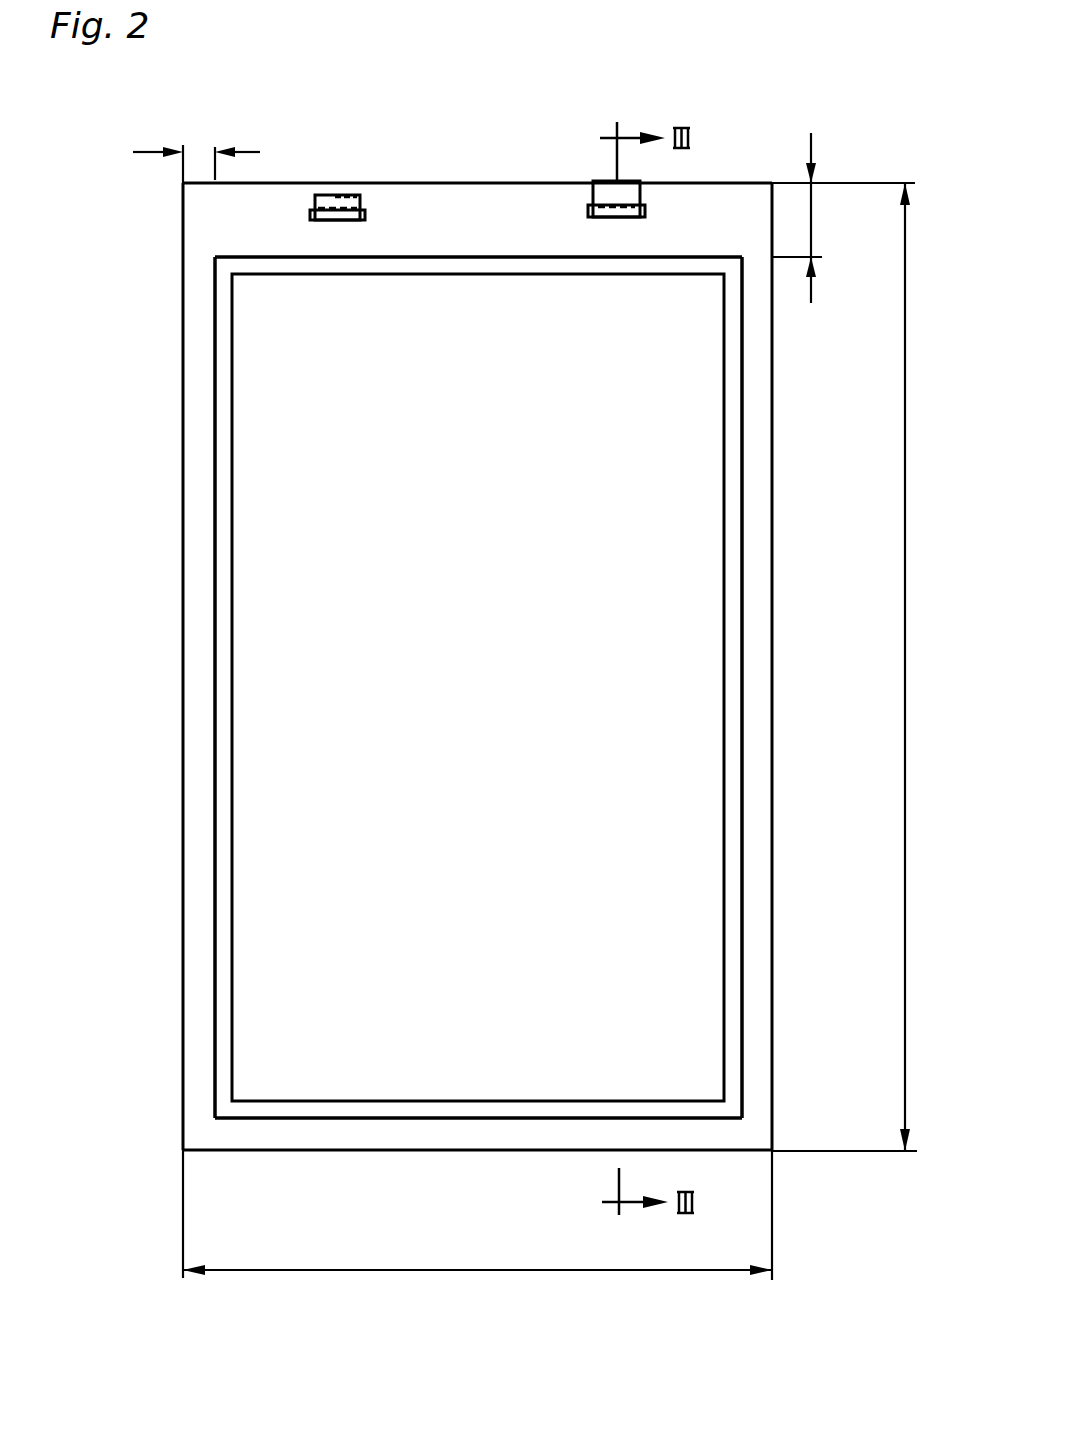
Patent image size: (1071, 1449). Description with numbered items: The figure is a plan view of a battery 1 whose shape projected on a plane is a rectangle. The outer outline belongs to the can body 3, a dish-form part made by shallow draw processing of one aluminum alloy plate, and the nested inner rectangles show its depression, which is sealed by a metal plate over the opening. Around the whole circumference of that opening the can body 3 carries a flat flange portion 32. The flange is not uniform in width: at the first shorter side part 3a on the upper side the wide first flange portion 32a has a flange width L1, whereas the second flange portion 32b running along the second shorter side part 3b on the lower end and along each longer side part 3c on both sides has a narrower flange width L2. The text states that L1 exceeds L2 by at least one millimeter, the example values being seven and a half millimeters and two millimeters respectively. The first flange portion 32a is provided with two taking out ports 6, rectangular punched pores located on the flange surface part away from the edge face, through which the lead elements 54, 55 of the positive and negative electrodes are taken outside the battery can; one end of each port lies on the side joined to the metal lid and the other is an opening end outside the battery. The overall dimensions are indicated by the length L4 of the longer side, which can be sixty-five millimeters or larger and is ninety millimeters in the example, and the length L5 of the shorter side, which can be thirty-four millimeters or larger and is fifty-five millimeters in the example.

The battery 1 is at (125, 268).
The can body 3 is at (477, 664).
The first shorter side part 3a is at (400, 185).
The second shorter side part 3b is at (435, 1150).
The longer side part 3c is at (184, 535).
The taking out port 6 is at (365, 213).
The flange portion 32 is at (178, 667).
The first flange portion 32a is at (467, 207).
The second flange portion 32b is at (200, 457).
The lead element 54 is at (625, 197).
The lead element 55 is at (320, 205).
The flange width of first flange portion L1 is at (812, 220).
The flange width of second flange portion L2 is at (202, 152).
The length of longer side part L4 is at (903, 543).
The length of shorter side part L5 is at (518, 1270).